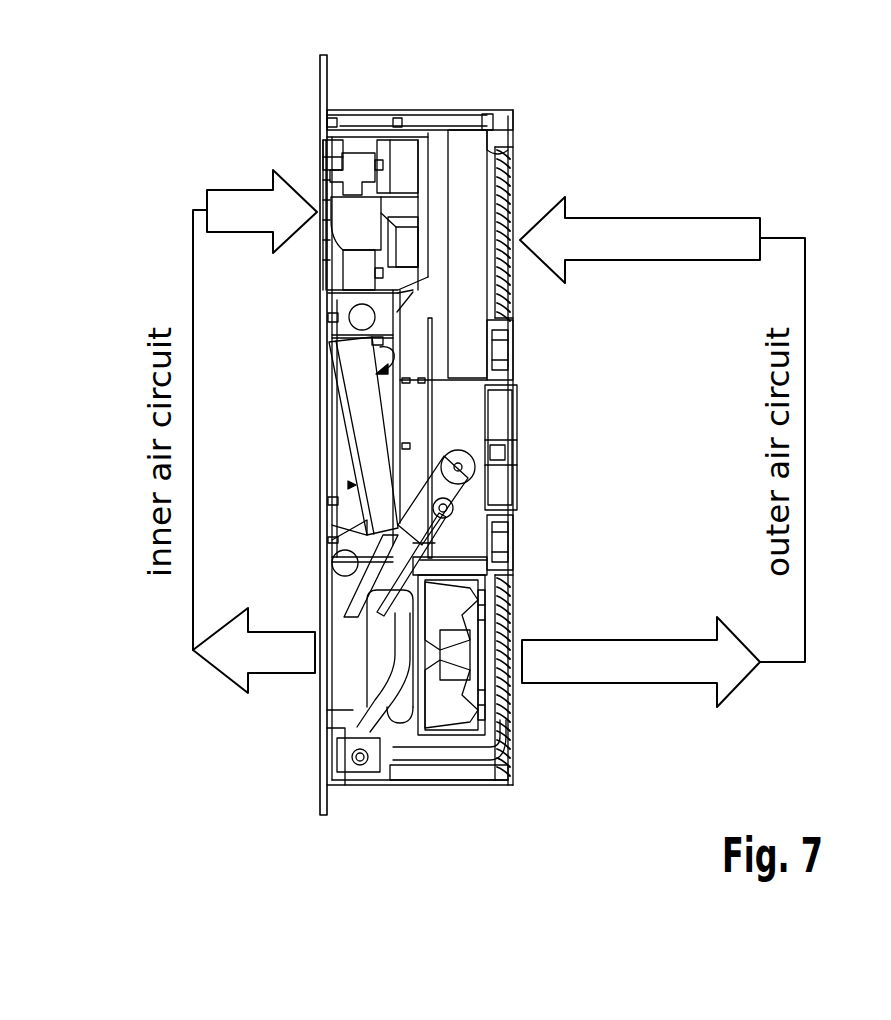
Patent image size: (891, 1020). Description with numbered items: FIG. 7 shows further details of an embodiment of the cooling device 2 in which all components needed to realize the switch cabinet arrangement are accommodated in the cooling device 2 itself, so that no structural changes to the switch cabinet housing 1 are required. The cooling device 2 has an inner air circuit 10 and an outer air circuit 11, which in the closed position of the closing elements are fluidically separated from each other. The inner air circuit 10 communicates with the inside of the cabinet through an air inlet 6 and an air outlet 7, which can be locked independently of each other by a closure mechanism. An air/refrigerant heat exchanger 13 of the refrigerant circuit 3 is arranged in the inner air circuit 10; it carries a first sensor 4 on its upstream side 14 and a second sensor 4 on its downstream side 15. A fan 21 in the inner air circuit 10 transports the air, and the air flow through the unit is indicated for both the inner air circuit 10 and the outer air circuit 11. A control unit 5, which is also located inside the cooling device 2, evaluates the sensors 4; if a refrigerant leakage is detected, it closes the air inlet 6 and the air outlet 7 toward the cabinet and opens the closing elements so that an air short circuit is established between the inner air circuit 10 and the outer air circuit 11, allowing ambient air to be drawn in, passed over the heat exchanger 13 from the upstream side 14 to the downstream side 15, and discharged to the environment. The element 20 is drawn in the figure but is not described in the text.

The switch cabinet housing 1 is at (320, 63).
The cooling device 2 is at (473, 110).
The refrigerant circuit 3 is at (432, 398).
The sensor 4 is at (360, 316).
The control unit 5 is at (402, 160).
The air inlet 6 is at (320, 146).
The air outlet 7 is at (327, 697).
The inner air circuit 10 is at (335, 450).
The outer air circuit 11 is at (455, 424).
The air/refrigerant heat exchanger 13 is at (350, 383).
The upstream side 14 is at (380, 347).
The downstream side 15 is at (348, 485).
The condensate hose 20 is at (387, 667).
The fan 21 is at (324, 190).